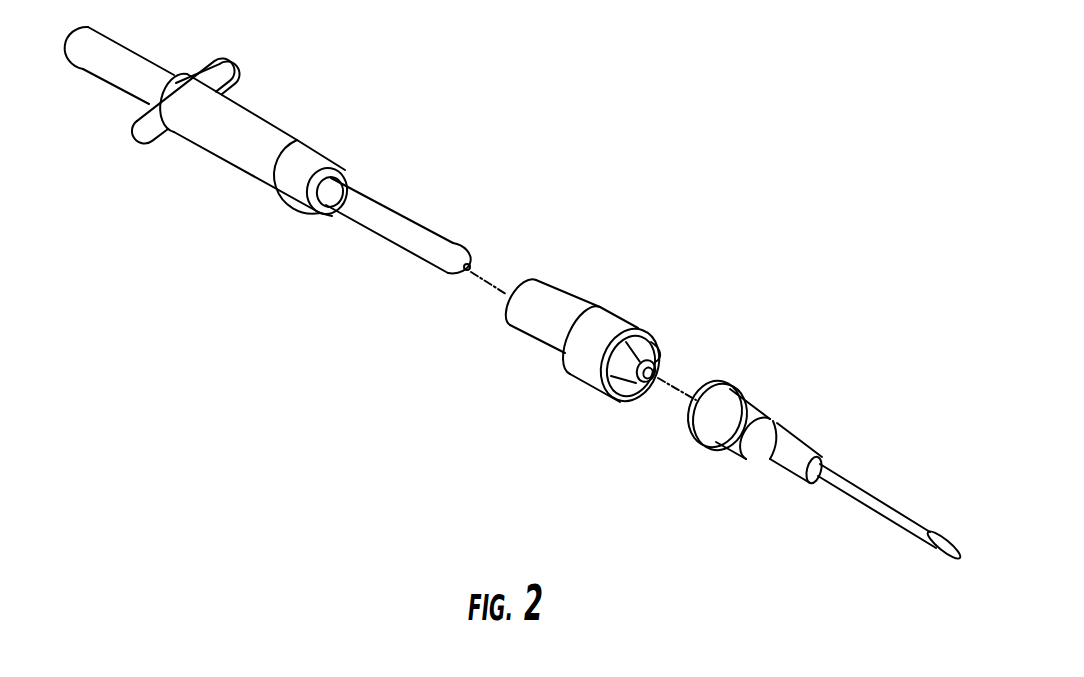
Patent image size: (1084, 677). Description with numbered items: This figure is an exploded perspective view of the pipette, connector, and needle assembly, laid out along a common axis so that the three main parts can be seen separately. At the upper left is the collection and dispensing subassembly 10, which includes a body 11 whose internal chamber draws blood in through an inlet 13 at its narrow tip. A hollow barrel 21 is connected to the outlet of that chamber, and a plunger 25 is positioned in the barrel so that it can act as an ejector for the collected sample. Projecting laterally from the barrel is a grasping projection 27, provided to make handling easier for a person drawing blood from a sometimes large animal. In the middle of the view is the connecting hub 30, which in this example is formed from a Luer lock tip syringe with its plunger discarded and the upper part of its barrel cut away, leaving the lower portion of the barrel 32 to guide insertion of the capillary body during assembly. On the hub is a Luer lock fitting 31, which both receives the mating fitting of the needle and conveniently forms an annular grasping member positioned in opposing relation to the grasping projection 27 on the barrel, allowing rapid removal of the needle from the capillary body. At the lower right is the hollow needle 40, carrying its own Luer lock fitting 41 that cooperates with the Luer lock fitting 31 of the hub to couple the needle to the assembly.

The collection and dispensing subassembly 10 is at (297, 140).
The body 11 is at (400, 213).
The inlet 13 is at (470, 268).
The hollow barrel 21 is at (268, 122).
The plunger 25 is at (113, 53).
The grasping projection 27 is at (223, 83).
The connecting hub 30 is at (605, 355).
The Luer lock fitting 31 is at (633, 326).
The lower portion of the barrel 32 is at (547, 293).
The hollow needle 40 is at (822, 457).
The Luer lock fitting 41 is at (730, 392).